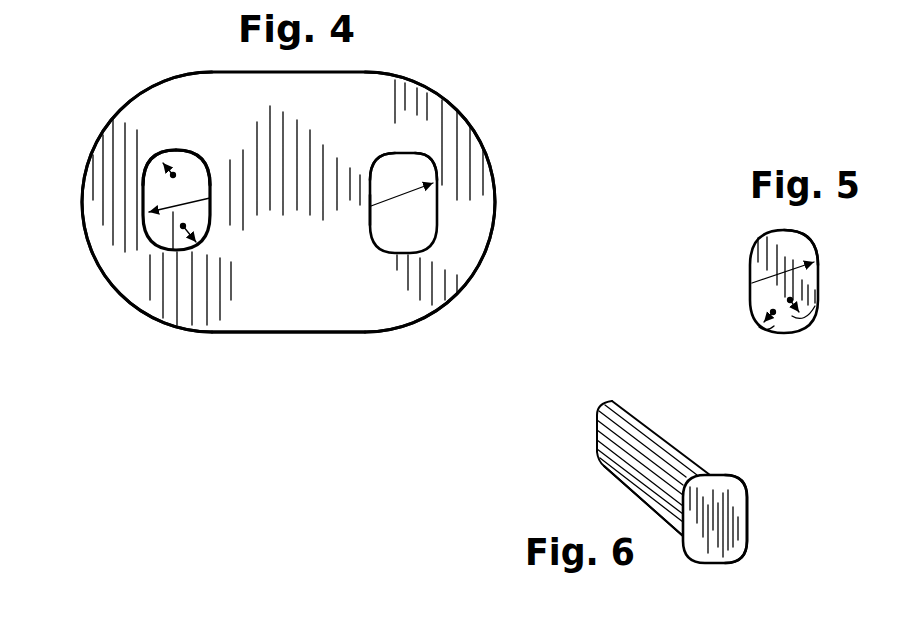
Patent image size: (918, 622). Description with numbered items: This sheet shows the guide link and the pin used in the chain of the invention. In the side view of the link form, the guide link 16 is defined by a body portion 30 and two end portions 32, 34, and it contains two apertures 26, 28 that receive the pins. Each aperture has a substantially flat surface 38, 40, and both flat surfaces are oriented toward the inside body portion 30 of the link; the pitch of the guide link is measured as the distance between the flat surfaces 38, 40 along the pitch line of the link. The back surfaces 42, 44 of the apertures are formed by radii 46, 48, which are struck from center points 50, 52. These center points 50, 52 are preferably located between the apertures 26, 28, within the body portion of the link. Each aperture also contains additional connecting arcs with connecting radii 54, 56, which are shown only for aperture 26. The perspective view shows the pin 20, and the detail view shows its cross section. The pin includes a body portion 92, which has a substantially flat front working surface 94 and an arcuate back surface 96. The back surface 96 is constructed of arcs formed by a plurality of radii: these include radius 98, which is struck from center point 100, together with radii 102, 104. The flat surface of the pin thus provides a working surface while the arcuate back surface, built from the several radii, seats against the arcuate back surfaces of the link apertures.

In FIG. 4, the guide link 16 is at (359, 71).
In FIG. 4, the aperture 26 is at (168, 146).
In FIG. 4, the aperture 28 is at (410, 150).
In FIG. 4, the body portion 30 is at (323, 310).
In FIG. 4, the end portion 32 is at (93, 205).
In FIG. 4, the end portion 34 is at (480, 213).
In FIG. 4, the flat surface 38 is at (212, 172).
In FIG. 4, the flat surface 40 is at (370, 174).
In FIG. 4, the back surface 42 is at (152, 176).
In FIG. 4, the back surface 44 is at (430, 168).
In FIG. 4, the radius 46 is at (196, 248).
In FIG. 4, the radius 48 is at (389, 200).
In FIG. 4, the center point 50 is at (207, 203).
In FIG. 4, the center point 52 is at (370, 206).
In FIG. 4, the connecting radius 54 is at (174, 173).
In FIG. 4, the connecting radius 56 is at (193, 231).
In FIG. 6, the pin 20 is at (727, 497).
In FIG. 6, the body portion 92 is at (623, 425).
In FIG. 6, the front working surface 94 is at (747, 523).
In FIG. 5, the back surface 96 is at (818, 292).
In FIG. 6, the back surface 96 is at (680, 520).
In FIG. 5, the radius 98 is at (793, 260).
In FIG. 5, the center point 100 is at (752, 283).
In FIG. 5, the radius 102 is at (815, 306).
In FIG. 5, the radius 104 is at (775, 332).